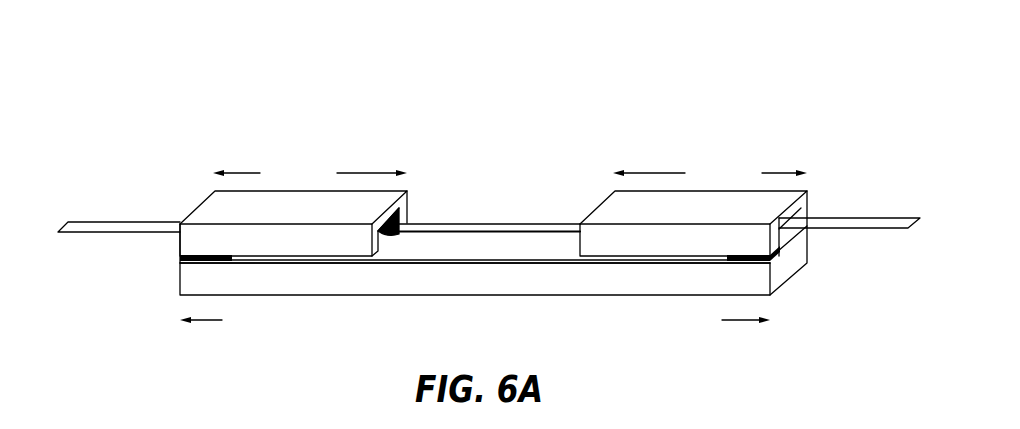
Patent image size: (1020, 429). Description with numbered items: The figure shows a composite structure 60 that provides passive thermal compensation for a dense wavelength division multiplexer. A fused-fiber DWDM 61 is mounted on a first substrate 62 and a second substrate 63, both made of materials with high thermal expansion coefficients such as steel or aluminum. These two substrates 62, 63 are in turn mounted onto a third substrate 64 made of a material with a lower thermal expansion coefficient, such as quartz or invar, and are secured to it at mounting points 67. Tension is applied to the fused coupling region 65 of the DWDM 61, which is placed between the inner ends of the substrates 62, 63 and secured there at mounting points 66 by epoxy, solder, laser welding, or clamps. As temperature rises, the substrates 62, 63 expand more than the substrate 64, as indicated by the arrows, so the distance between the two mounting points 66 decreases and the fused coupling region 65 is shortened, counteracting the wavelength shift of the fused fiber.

The composite structure 60 is at (343, 108).
The fused-fiber DWDM 61 is at (128, 208).
The first substrate 62 is at (300, 200).
The second substrate 63 is at (700, 202).
The third substrate 64 is at (477, 280).
The fused coupling region 65 is at (498, 225).
The mounting points 66 is at (407, 213).
The mounting points 67 is at (180, 258).